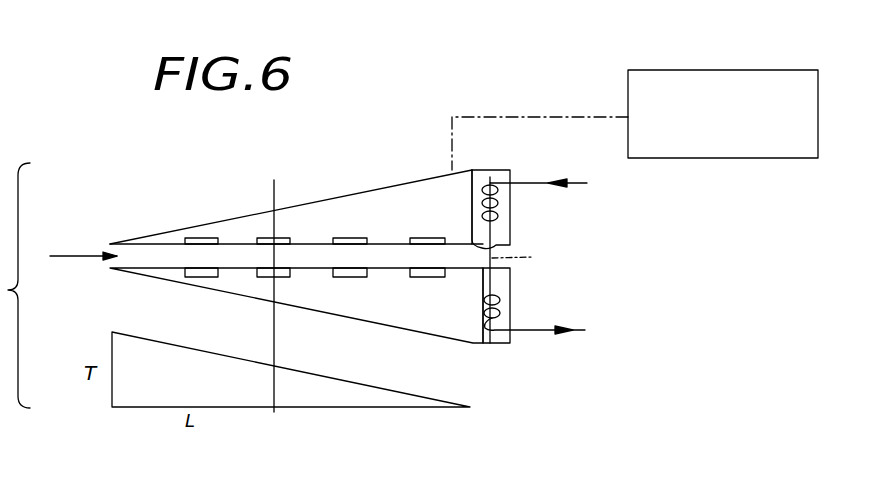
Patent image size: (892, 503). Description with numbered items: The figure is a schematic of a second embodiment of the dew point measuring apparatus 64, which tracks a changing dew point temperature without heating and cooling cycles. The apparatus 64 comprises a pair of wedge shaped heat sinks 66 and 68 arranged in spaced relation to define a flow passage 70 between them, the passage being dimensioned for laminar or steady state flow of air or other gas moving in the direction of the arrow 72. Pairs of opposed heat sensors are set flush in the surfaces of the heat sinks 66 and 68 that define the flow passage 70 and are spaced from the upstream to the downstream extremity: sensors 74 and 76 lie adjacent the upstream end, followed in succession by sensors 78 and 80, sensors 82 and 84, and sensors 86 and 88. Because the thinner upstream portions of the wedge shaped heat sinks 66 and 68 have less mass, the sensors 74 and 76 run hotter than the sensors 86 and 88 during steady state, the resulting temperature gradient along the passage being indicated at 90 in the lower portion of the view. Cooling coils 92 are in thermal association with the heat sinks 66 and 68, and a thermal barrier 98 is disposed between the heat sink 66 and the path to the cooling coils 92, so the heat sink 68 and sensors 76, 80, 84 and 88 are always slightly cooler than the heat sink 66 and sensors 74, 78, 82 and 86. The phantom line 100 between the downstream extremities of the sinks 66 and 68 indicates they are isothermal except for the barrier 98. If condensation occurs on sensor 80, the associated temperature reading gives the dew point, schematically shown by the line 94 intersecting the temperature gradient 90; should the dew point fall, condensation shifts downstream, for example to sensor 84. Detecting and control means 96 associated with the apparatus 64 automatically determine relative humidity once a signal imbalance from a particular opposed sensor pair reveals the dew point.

The dew point measuring apparatus 64 is at (396, 180).
The wedge shaped heat sink 66 is at (452, 192).
The wedge shaped heat sink 68 is at (464, 332).
The flow passage 70 is at (506, 243).
The arrow 72 is at (62, 256).
The heat sensor 74 is at (198, 238).
The heat sensor 76 is at (188, 278).
The heat sensor 78 is at (288, 238).
The heat sensor 80 is at (283, 278).
The heat sensor 82 is at (350, 237).
The heat sensor 84 is at (355, 278).
The heat sensor 86 is at (418, 237).
The heat sensor 88 is at (425, 278).
The temperature gradient 90 is at (123, 332).
The cooling coils 92 is at (505, 210).
The line 94 is at (274, 412).
The detecting and control means 96 is at (742, 68).
The thermal barrier 98 is at (475, 180).
The phantom line 100 is at (533, 258).